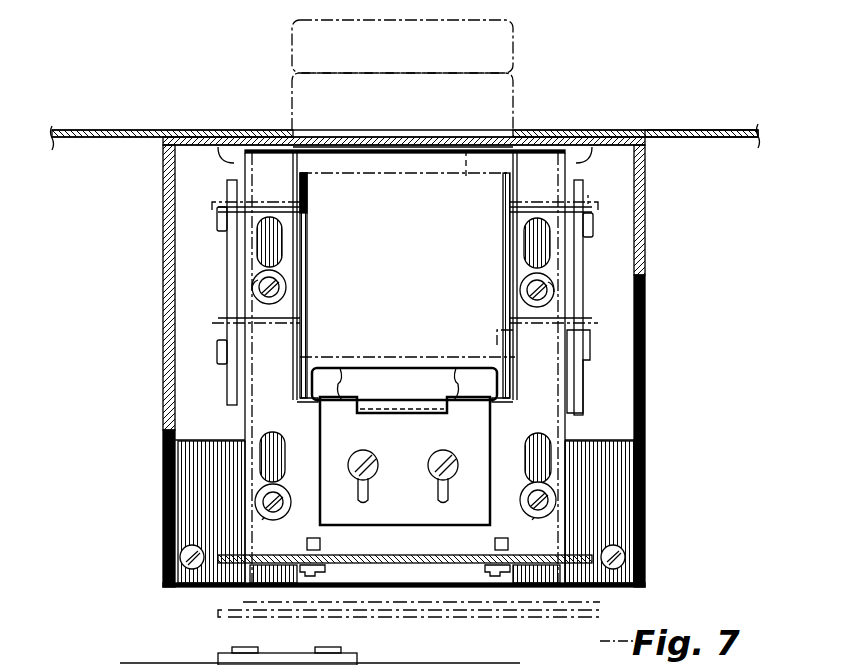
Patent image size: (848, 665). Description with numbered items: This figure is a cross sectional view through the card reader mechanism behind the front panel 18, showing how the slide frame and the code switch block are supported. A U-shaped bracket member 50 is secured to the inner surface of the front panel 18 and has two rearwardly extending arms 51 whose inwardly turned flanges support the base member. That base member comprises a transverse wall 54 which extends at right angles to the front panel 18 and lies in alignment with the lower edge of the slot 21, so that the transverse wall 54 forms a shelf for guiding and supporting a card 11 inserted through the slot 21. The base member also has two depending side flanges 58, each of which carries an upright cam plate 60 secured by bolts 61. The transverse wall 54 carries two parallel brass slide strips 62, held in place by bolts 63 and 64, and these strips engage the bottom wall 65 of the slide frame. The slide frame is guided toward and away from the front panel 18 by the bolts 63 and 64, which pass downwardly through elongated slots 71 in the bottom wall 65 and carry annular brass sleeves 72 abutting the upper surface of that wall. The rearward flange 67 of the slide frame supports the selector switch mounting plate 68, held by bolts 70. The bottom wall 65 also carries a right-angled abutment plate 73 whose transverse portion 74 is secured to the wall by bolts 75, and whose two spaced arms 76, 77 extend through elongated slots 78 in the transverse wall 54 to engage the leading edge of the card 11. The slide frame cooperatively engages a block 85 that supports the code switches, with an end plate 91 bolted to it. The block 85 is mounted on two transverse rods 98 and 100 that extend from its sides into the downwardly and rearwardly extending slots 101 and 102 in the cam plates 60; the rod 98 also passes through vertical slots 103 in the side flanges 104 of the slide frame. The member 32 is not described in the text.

The card 11 is at (513, 61).
The front panel 18 is at (688, 131).
The slot 21 is at (400, 138).
The panel board 32 is at (85, 128).
The U-shaped bracket member 50 is at (646, 372).
The rearwardly extending arms 51 is at (175, 426).
The transverse wall 54 is at (517, 348).
The depending side flanges 58 is at (227, 148).
The cam plate 60 is at (232, 282).
The bolts 61 is at (594, 226).
The brass slide strips 62 is at (260, 585).
The bolt 63 is at (280, 292).
The bolt 64 is at (256, 500).
The bottom wall 65 is at (256, 420).
The rearward flange 67 is at (386, 554).
The selector switch mounting plate 68 is at (592, 592).
The bolts 70 is at (324, 570).
The elongated slots 71 is at (270, 238).
The annular brass sleeves 72 is at (262, 300).
The right-angled abutment plate 73 is at (365, 430).
The transverse portion 74 is at (405, 461).
The bolts 75 is at (428, 466).
The arm 76 is at (346, 368).
The arm 77 is at (508, 346).
The elongated slots 78 is at (422, 360).
The block 85 is at (466, 150).
The end plate 91 is at (288, 654).
The transverse rod 98 is at (590, 200).
The transverse rod 100 is at (590, 352).
The slot 101 is at (215, 232).
The slot 102 is at (218, 378).
The vertical slots 103 is at (304, 211).
The side flanges 104 is at (502, 190).